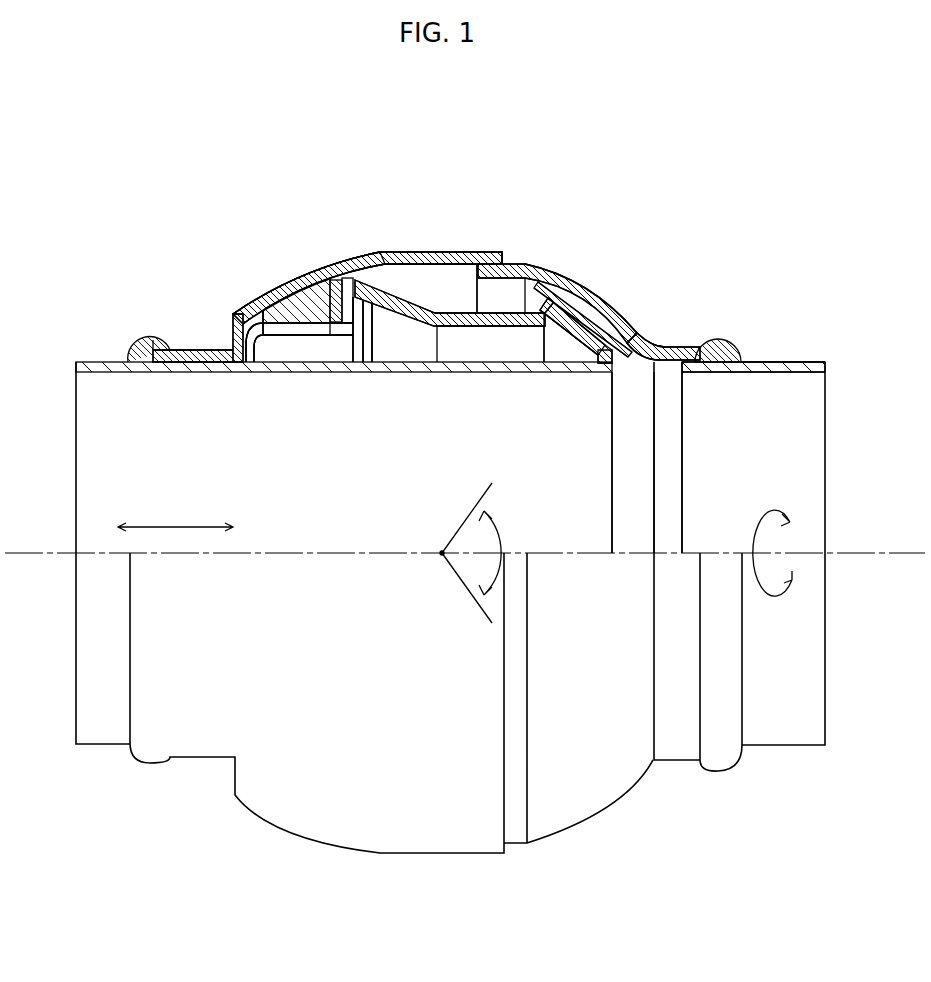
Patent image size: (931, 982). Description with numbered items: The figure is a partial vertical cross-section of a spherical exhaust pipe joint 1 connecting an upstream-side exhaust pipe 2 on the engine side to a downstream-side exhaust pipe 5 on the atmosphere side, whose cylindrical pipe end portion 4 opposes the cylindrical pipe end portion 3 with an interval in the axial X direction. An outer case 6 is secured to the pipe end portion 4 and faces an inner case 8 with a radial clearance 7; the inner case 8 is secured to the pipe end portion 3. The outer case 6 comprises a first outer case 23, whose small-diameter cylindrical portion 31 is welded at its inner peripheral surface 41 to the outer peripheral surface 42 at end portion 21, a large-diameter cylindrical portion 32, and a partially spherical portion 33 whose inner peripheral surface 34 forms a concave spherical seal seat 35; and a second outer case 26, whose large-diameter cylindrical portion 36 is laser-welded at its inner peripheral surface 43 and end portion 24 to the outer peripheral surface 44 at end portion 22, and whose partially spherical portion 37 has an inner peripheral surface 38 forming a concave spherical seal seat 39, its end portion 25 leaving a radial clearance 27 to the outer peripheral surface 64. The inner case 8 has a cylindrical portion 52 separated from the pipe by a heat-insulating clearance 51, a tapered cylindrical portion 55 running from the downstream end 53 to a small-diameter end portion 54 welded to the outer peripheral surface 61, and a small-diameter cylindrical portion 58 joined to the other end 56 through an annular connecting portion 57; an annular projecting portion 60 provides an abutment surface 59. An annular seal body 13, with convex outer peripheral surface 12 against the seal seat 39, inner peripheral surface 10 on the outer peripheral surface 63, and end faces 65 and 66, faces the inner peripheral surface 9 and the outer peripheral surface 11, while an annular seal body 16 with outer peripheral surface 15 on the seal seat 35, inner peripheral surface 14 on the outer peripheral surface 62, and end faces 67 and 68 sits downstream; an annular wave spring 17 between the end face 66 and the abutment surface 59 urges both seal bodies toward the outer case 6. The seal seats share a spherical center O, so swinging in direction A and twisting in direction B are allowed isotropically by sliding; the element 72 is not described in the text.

The spherical exhaust pipe joint 1 is at (340, 262).
The upstream-side exhaust pipe 2 is at (82, 366).
The cylindrical pipe end portion 3 is at (600, 497).
The cylindrical pipe end portion 4 is at (698, 498).
The downstream-side exhaust pipe 5 is at (813, 362).
The outer case 6 is at (395, 262).
The clearance 7 is at (384, 270).
The inner case 8 is at (477, 310).
The inner peripheral surface 9 is at (368, 282).
The inner peripheral surface 10 is at (278, 318).
The outer peripheral surface 11 is at (457, 308).
The outer peripheral surface 12 is at (290, 300).
The annular seal body 13 is at (295, 283).
The inner peripheral surface 14 is at (557, 333).
The outer peripheral surface 15 is at (607, 330).
The annular seal body 16 is at (604, 317).
The annular wave spring 17 is at (330, 273).
The end portion 21 is at (722, 373).
The end portion 22 is at (480, 253).
The first outer case 23 is at (578, 333).
The end portion 24 is at (488, 272).
The end portion 25 is at (238, 324).
The second outer case 26 is at (433, 253).
The radial clearance 27 is at (236, 335).
The small-diameter cylindrical portion 31 is at (695, 342).
The large-diameter cylindrical portion 32 is at (510, 272).
The partially spherical portion 33 is at (612, 312).
The inner peripheral surface 34 is at (612, 340).
The concave spherical seal seat 35 is at (563, 305).
The large-diameter cylindrical portion 36 is at (418, 264).
The partially spherical portion 37 is at (296, 275).
The inner peripheral surface 38 is at (262, 305).
The concave spherical seal seat 39 is at (280, 286).
The inner peripheral surface 41 is at (695, 368).
The outer peripheral surface 42 is at (757, 360).
The inner peripheral surface 43 is at (458, 272).
The outer peripheral surface 44 is at (512, 270).
The radial heat-insulating clearance 51 is at (356, 347).
The cylindrical portion 52 is at (307, 333).
The downstream end 53 is at (537, 322).
The cylindrical small-diameter end portion 54 is at (578, 349).
The tapered cylindrical portion 55 is at (567, 327).
The other end 56 is at (258, 320).
The annular connecting portion 57 is at (247, 355).
The small-diameter cylindrical portion 58 is at (175, 357).
The annular abutment surface 59 is at (333, 330).
The annular projecting portion 60 is at (376, 347).
The outer peripheral surface 61 is at (127, 357).
The outer peripheral surface 62 is at (563, 318).
The outer peripheral surface 63 is at (468, 316).
The outer peripheral surface 64 is at (173, 350).
The annular end face 65 is at (272, 328).
The annular end face 66 is at (327, 312).
The annular end face 67 is at (541, 318).
The annular end face 68 is at (615, 350).
The spacer 72 is at (340, 282).
The X direction X is at (175, 523).
The spherical center O is at (440, 551).
The direction of angular displacement A is at (503, 553).
The twisting direction B is at (778, 597).